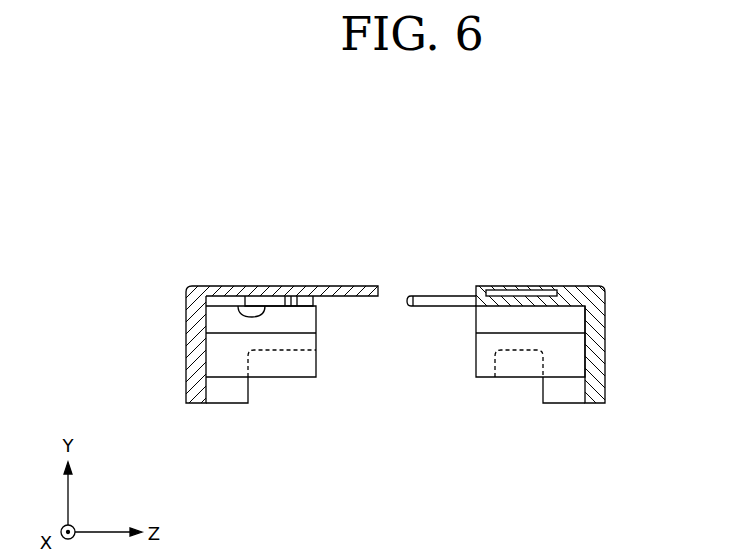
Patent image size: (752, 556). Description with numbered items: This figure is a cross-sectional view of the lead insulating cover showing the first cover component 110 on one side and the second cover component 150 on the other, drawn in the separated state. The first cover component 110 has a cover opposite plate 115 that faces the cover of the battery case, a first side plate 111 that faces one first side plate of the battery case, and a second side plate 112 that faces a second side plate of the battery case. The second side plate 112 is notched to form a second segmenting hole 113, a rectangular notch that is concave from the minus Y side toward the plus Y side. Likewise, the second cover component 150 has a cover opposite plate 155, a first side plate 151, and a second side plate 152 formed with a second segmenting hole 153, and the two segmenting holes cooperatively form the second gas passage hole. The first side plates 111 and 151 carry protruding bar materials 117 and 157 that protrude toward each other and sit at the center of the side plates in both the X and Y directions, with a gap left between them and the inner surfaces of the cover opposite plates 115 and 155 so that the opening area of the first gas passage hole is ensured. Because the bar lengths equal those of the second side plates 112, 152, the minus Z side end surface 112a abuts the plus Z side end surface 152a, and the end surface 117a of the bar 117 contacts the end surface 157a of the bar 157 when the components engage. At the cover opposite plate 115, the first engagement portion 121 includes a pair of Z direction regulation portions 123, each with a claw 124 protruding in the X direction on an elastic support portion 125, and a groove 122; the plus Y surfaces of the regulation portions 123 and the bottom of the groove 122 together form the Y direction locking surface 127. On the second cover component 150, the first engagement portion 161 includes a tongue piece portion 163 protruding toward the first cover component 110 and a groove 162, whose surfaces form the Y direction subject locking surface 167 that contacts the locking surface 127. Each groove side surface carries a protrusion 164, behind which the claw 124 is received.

The first cover component 110 is at (617, 283).
The first side plate 111 is at (605, 342).
The second side plate 112 is at (568, 395).
The −Z-side end surface 112a is at (476, 323).
The second segmenting hole 113 is at (495, 351).
The cover opposite plate 115 is at (583, 286).
The protruding bar material 117 is at (530, 370).
The −Z-side end surface 117a is at (476, 360).
The first engagement portion (A) 121 is at (435, 147).
The groove 122 is at (513, 286).
The Z direction regulation portion 123 is at (405, 192).
The claw 124 is at (413, 295).
The elastic support portion 125 is at (455, 295).
The Y direction locking surface 127 is at (537, 286).
The second cover component 150 is at (167, 283).
The first side plate 151 is at (186, 345).
The second side plate 152 is at (222, 397).
The +Z-side end surface 152a is at (317, 322).
The second segmenting hole 153 is at (295, 351).
The cover opposite plate 155 is at (217, 285).
The protruding bar material 157 is at (262, 370).
The +Z-side end surface 157a is at (317, 360).
The first engagement portion (A) 161 is at (278, 167).
The groove 162 is at (312, 285).
The tongue piece portion 163 is at (362, 285).
The protrusion 164 is at (290, 285).
The Y direction subject locking surface 167 is at (235, 285).